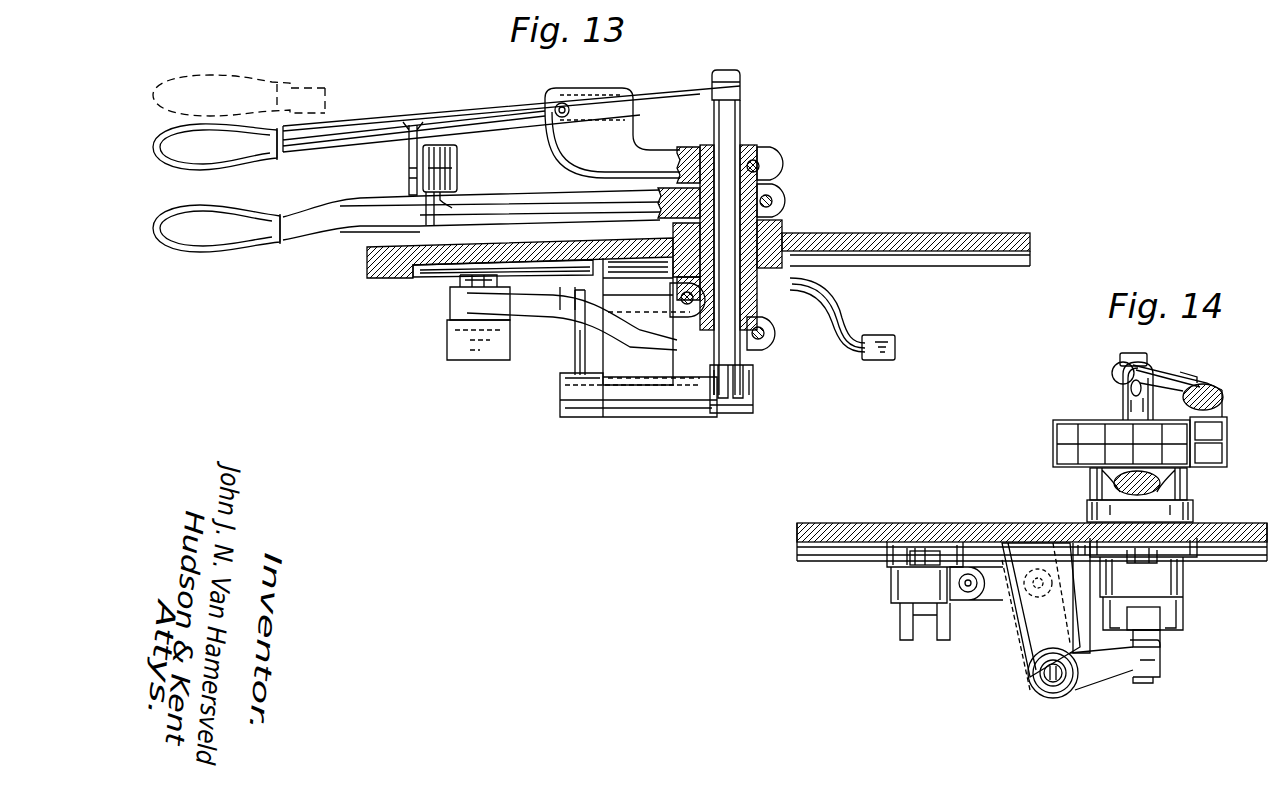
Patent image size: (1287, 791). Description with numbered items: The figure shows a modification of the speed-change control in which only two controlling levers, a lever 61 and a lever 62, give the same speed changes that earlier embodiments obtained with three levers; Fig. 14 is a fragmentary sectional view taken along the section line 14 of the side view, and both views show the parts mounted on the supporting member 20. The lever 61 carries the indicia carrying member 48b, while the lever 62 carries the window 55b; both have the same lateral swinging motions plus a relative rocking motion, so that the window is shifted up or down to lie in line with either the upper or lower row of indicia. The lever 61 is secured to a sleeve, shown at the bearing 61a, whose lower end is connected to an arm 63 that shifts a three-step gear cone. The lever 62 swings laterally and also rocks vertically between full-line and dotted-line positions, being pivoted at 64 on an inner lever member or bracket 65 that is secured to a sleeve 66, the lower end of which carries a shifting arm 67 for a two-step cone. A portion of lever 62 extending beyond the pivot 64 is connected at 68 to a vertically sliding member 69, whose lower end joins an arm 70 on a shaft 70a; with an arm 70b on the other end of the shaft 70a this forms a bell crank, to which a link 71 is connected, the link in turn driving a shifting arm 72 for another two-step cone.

In FIG. 13, the section line 14— 14 is at (403, 70).
In FIG. 13, the supporting rail 20 is at (890, 234).
In FIG. 14, the supporting rail 20 is at (993, 522).
In FIG. 13, the indicia carrying member 48b is at (460, 168).
In FIG. 14, the indicia carrying member 48b is at (1053, 450).
In FIG. 13, the window 55b is at (409, 180).
In FIG. 14, the window 55b is at (1212, 467).
In FIG. 13, the lever 61 is at (330, 232).
In FIG. 14, the lever 61 is at (1115, 488).
In FIG. 13, the bearing block 61a is at (782, 230).
In FIG. 13, the lever 62 is at (320, 130).
In FIG. 14, the lever 62 is at (1215, 387).
In FIG. 13, the arm 63 is at (830, 300).
In FIG. 13, the pivot 64 is at (565, 104).
In FIG. 14, the pivot 64 is at (1128, 392).
In FIG. 13, the inner lever member or bracket 65 is at (566, 157).
In FIG. 14, the inner lever member or bracket 65 is at (1195, 372).
In FIG. 13, the sleeve 66 is at (770, 190).
In FIG. 13, the shifting arm 67 is at (638, 328).
In FIG. 14, the shifting arm 67 is at (1195, 585).
In FIG. 13, the connection 68 is at (742, 95).
In FIG. 14, the connection 68 is at (1113, 375).
In FIG. 13, the vertically sliding member 69 is at (740, 125).
In FIG. 13, the arm 70 is at (740, 410).
In FIG. 14, the arm 70 is at (1102, 680).
In FIG. 13, the shaft 70a is at (650, 405).
In FIG. 14, the shaft 70a is at (1045, 683).
In FIG. 13, the arm 70b is at (573, 350).
In FIG. 14, the arm 70b is at (1015, 650).
In FIG. 14, the link 71 is at (1005, 598).
In FIG. 13, the shifting arm 72 is at (623, 262).
In FIG. 14, the shifting arm 72 is at (888, 580).